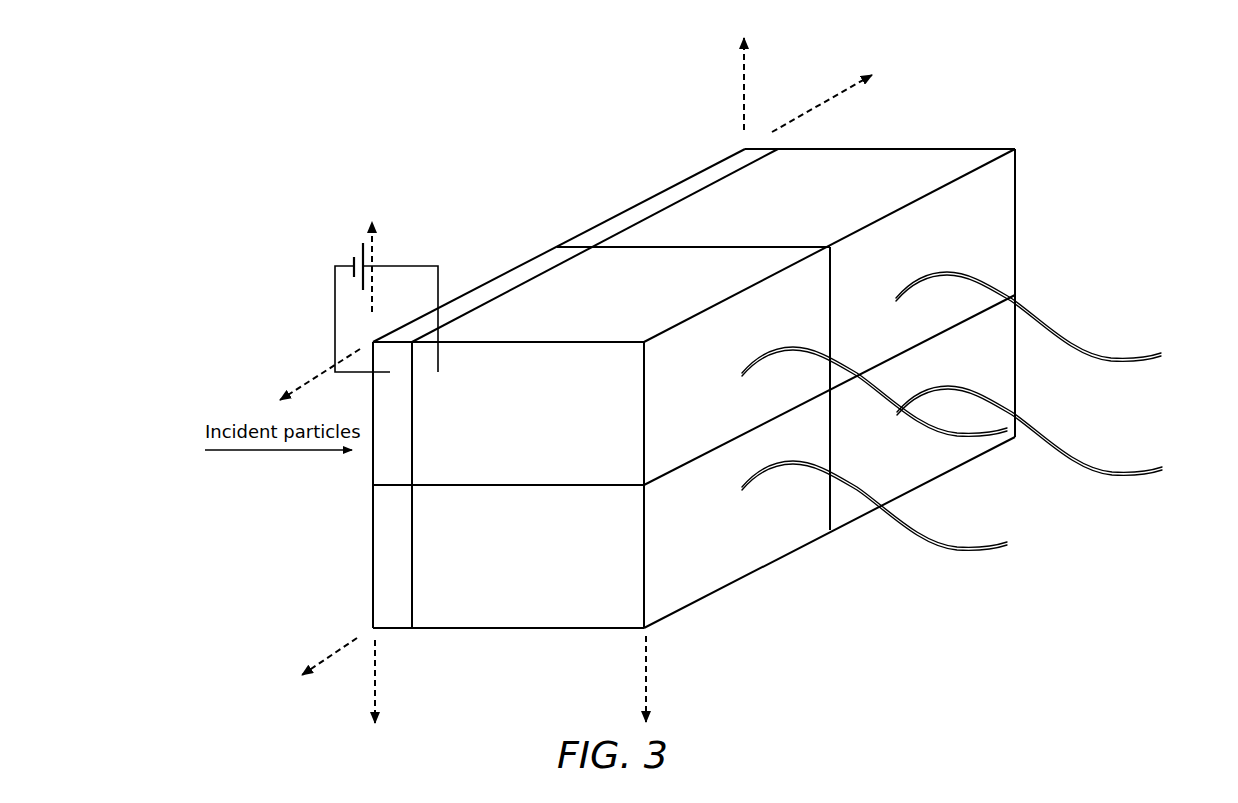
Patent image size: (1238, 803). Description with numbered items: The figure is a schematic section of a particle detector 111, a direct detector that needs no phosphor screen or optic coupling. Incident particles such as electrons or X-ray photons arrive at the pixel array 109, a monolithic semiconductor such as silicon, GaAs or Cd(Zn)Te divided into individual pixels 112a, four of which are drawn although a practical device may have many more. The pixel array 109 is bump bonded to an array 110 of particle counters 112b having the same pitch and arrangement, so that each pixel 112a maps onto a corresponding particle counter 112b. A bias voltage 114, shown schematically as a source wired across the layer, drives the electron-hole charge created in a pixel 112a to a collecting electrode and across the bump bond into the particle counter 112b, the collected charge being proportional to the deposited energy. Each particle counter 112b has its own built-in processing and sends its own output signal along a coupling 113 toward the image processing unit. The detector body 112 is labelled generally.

The pixel array 109 is at (412, 631).
The array of particle counters 110 is at (645, 631).
The detector 111 is at (797, 649).
The detector body surface 112 is at (547, 285).
The pixel 112a is at (386, 530).
The particle counter 112b is at (634, 529).
The coupling 113 is at (1172, 348).
The bias voltage 114 is at (324, 265).